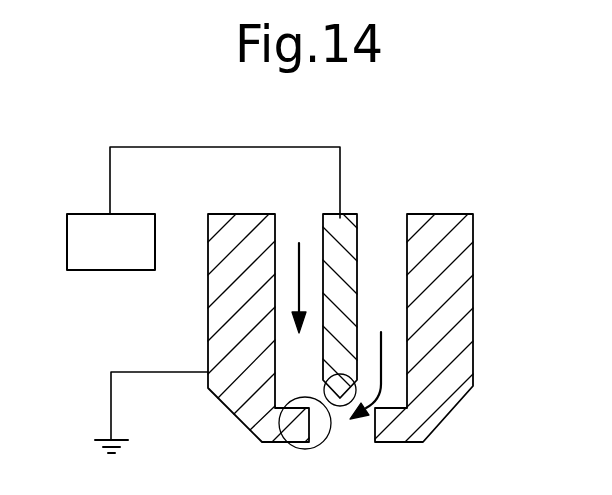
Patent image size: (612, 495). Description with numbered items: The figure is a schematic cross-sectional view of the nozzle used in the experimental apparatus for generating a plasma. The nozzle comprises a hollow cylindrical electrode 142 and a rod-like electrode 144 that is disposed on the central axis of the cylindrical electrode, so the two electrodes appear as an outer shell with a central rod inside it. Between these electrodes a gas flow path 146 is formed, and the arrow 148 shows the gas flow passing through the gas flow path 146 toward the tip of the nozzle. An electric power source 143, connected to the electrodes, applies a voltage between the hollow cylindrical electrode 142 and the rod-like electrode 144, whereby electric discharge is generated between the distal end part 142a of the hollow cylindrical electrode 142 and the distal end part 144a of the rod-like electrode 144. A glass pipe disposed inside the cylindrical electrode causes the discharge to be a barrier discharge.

The hollow cylindrical electrode 142 is at (440, 227).
The distal end part of the hollow cylindrical electrode 142a is at (297, 448).
The electric power source 143 is at (83, 212).
The rod-like electrode 144 is at (352, 235).
The distal end part of the rod-like electrode 144a is at (342, 408).
The gas flow path 146 is at (318, 371).
The arrow 148 is at (300, 278).